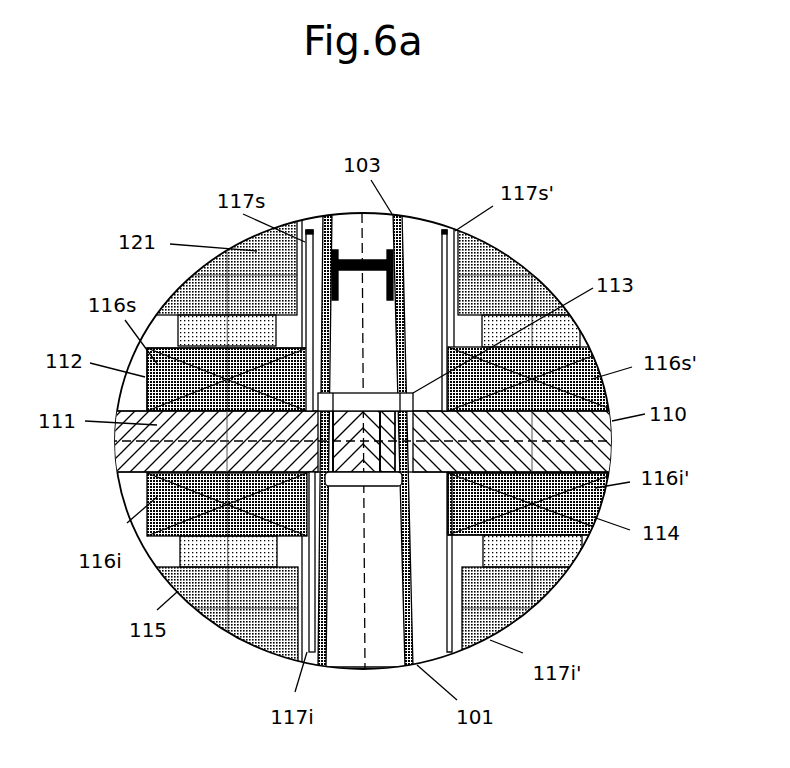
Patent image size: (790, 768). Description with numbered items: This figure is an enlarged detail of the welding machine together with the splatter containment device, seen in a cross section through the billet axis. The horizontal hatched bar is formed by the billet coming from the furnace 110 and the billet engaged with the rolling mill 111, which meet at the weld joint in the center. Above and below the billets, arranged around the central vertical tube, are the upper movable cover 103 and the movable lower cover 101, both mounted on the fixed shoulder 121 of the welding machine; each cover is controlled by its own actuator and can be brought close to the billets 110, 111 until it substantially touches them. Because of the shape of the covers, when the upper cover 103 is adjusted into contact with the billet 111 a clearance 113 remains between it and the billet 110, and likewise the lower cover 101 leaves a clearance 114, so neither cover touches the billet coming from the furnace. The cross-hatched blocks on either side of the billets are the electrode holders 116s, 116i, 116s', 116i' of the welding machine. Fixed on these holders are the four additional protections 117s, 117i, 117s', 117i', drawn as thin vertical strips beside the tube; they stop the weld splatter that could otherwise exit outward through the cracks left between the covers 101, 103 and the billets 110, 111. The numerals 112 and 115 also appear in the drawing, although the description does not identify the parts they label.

The movable lower cover 101 is at (417, 665).
The upper movable cover 103 is at (392, 214).
The billet coming from the furnace 110 is at (612, 421).
The billet engaged with the rolling mill 111 is at (157, 425).
The coil 112 is at (145, 377).
The clearance 113 is at (413, 393).
The clearance 114 is at (593, 517).
The lower left housing part 115 is at (177, 592).
The electrode holder 116s is at (197, 352).
The electrode holder 116i is at (192, 523).
The electrode holder 116s' is at (572, 379).
The electrode holder 116i' is at (569, 500).
The additional protection 117s is at (265, 300).
The additional protection 117i is at (292, 600).
The additional protection 117s' is at (498, 296).
The additional protection 117i' is at (532, 578).
The fixed shoulder 121 is at (257, 251).